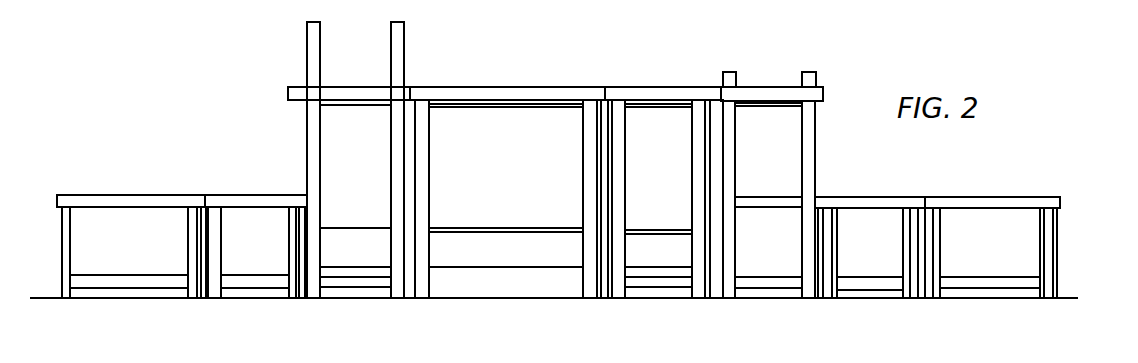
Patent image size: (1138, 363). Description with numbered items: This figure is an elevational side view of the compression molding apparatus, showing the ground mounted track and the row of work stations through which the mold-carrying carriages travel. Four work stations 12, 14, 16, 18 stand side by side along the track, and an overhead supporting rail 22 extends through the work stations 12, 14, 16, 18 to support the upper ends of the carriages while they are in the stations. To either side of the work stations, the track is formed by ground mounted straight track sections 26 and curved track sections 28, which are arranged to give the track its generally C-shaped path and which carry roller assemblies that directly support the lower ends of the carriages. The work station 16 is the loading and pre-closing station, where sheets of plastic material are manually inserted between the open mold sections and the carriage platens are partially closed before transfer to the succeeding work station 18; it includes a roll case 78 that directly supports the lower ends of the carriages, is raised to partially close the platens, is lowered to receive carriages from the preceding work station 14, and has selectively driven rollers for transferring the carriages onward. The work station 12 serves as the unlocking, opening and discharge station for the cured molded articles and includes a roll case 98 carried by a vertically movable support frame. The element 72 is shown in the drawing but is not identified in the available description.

The work station 12 is at (357, 88).
The work station 14 is at (448, 93).
The work station 16 is at (665, 92).
The work station 18 is at (776, 92).
The overhead supporting rail 22 is at (508, 107).
The straight track section 26 is at (247, 202).
The curved track section 28 is at (124, 202).
The lower shelf rail 72 is at (658, 230).
The roll case 78 is at (762, 203).
The roll case 98 is at (366, 228).